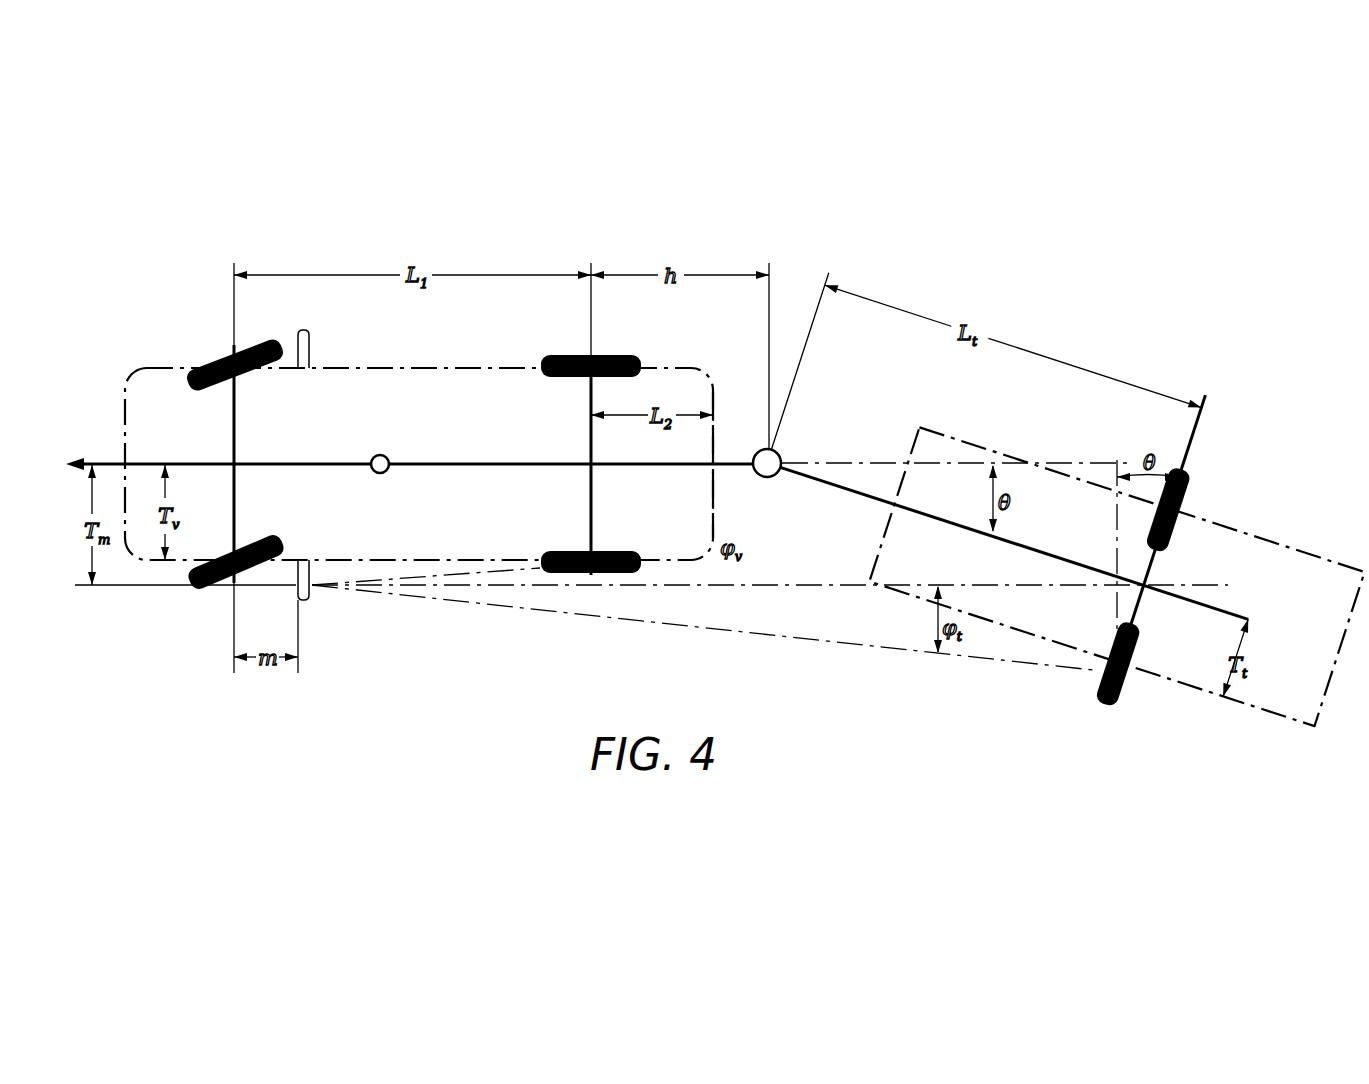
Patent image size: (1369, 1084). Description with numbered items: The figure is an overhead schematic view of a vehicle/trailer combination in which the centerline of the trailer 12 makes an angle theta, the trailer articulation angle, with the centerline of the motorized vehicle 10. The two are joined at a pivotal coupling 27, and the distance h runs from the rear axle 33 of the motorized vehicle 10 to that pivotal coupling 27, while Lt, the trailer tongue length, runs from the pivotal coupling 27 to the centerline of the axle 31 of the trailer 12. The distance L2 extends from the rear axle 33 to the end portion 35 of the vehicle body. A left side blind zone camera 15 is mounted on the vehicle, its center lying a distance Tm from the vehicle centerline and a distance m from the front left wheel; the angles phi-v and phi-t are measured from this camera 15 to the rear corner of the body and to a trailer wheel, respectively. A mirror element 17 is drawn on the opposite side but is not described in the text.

The motorized vehicle 10 is at (156, 390).
The trailer 12 is at (1085, 502).
The left side blind zone camera 15 is at (310, 592).
The passenger side mirror 17 is at (298, 350).
The pivotal coupling 27 is at (773, 462).
The axle of the trailer 31 is at (1152, 572).
The rear axle 33 is at (591, 513).
The end portion of the body 35 is at (715, 503).